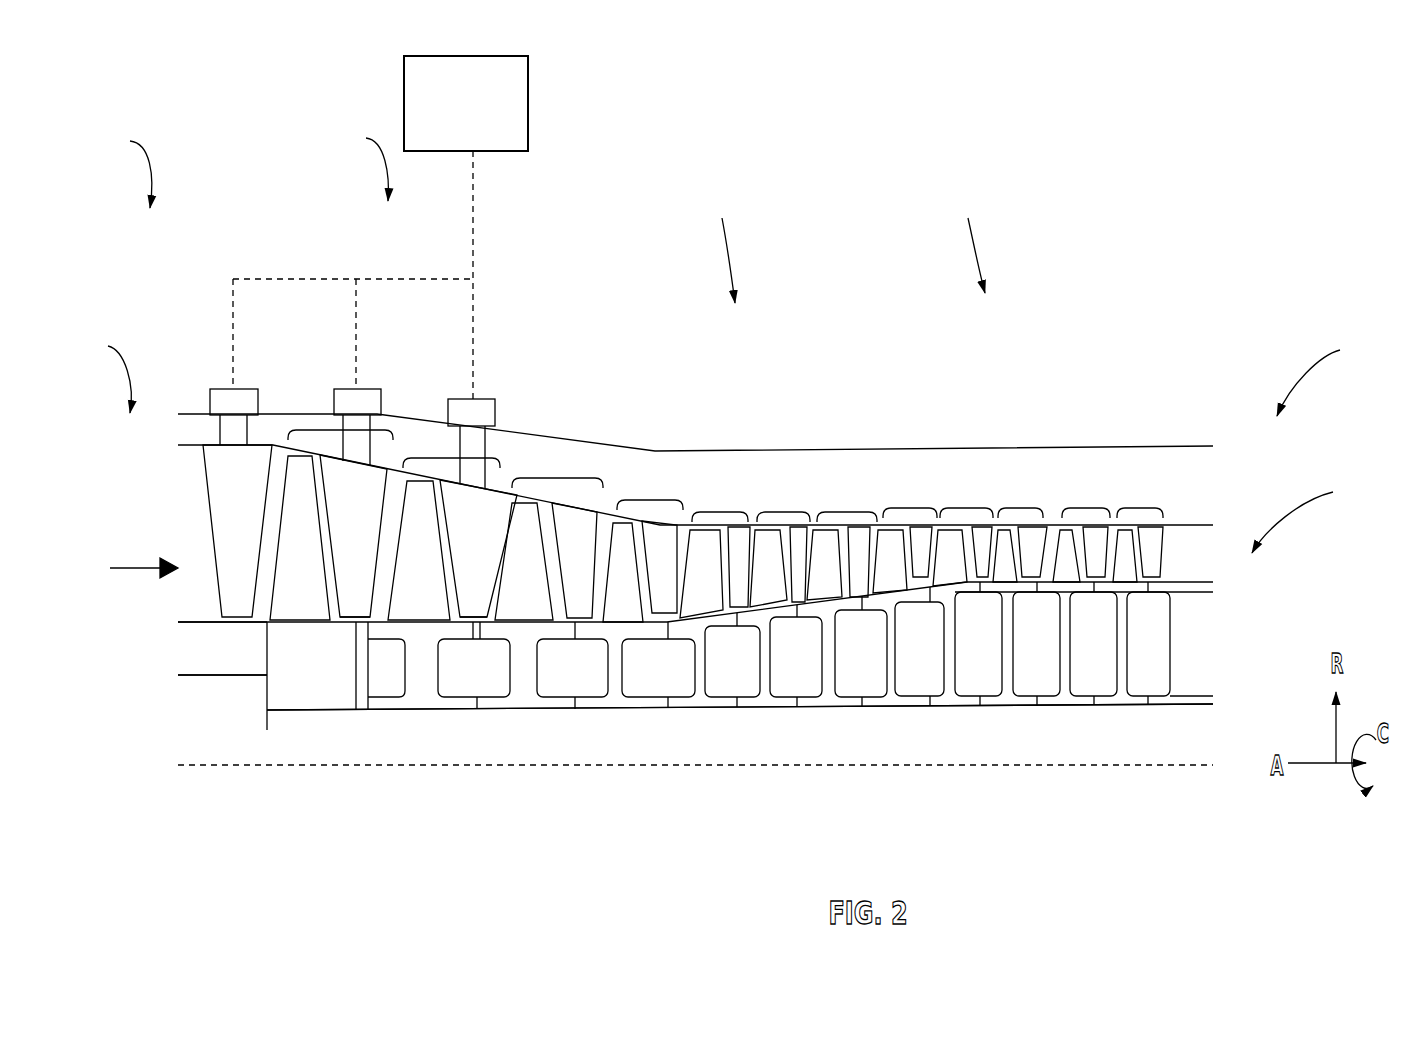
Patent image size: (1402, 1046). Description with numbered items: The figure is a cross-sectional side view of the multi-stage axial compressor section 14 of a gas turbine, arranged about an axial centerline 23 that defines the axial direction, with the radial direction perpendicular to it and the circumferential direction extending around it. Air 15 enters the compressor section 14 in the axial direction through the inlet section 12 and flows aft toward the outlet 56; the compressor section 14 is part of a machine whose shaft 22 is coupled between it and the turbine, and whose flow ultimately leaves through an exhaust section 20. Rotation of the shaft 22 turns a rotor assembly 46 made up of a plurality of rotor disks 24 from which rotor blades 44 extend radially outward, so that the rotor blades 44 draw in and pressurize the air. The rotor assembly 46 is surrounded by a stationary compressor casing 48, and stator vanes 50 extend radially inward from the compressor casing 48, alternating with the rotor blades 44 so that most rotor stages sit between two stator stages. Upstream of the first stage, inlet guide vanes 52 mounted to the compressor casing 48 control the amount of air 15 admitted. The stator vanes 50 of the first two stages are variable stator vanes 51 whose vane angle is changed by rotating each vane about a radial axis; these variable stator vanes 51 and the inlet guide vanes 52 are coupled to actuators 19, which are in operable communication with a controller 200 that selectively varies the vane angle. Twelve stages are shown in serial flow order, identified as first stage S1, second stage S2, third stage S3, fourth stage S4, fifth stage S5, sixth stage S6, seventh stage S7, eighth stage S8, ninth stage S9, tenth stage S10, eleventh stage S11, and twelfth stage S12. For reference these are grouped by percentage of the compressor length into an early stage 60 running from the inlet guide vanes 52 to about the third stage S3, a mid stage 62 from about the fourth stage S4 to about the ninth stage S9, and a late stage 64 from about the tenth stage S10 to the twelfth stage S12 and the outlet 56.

The inlet section 12 is at (105, 371).
The compressor section 14 is at (125, 165).
The air 15 is at (132, 568).
The actuator 19 is at (248, 389).
The exhaust section 20 is at (1324, 373).
The shaft 22 is at (677, 708).
The axial centerline 23 is at (1160, 768).
The rotor disks 24 is at (419, 662).
The rotor blades 44 is at (287, 611).
The rotor assembly 46 is at (233, 643).
The compressor casing 48 is at (197, 423).
The stator vanes 50 is at (345, 529).
The variable stator vanes 51 is at (473, 605).
The inlet guide vanes 52 is at (224, 492).
The outlet 56 is at (1307, 513).
The early stage 60 is at (362, 162).
The mid stage 62 is at (720, 244).
The late stage 64 is at (968, 239).
The controller 200 is at (446, 117).
The first stage S1 is at (340, 430).
The second stage S2 is at (452, 458).
The third stage S3 is at (557, 478).
The fourth stage S4 is at (650, 500).
The fifth stage S5 is at (720, 512).
The sixth stage S6 is at (783, 512).
The seventh stage S7 is at (847, 512).
The eighth stage S8 is at (910, 508).
The ninth stage S9 is at (967, 508).
The tenth stage S10 is at (1020, 508).
The eleventh stage S11 is at (1086, 508).
The twelfth stage S12 is at (1140, 508).